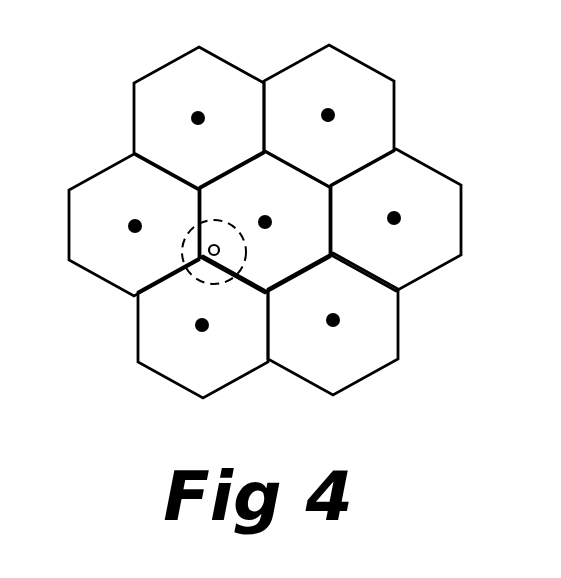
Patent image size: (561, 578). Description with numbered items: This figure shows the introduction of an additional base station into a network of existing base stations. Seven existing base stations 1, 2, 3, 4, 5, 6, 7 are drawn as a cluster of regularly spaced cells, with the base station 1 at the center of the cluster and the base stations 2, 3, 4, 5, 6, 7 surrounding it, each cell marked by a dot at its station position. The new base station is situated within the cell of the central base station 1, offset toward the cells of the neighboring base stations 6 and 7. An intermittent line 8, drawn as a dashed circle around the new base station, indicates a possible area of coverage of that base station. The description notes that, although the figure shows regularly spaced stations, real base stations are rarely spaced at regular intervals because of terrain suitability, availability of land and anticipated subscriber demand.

The base station 1 is at (265, 222).
The base station 2 is at (199, 118).
The base station 3 is at (329, 116).
The base station 4 is at (396, 220).
The base station 5 is at (333, 324).
The base station 6 is at (203, 327).
The base station 7 is at (134, 225).
The intermittent line 8 is at (184, 246).